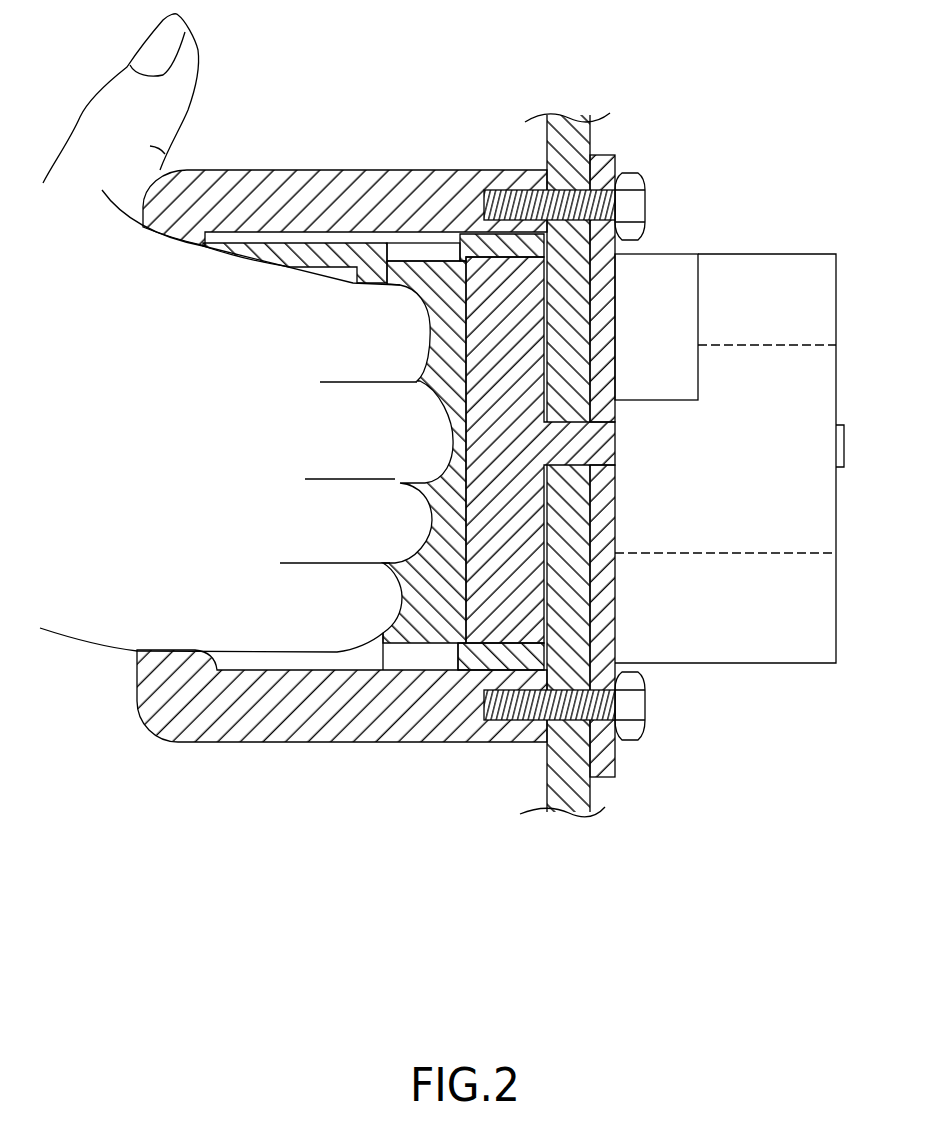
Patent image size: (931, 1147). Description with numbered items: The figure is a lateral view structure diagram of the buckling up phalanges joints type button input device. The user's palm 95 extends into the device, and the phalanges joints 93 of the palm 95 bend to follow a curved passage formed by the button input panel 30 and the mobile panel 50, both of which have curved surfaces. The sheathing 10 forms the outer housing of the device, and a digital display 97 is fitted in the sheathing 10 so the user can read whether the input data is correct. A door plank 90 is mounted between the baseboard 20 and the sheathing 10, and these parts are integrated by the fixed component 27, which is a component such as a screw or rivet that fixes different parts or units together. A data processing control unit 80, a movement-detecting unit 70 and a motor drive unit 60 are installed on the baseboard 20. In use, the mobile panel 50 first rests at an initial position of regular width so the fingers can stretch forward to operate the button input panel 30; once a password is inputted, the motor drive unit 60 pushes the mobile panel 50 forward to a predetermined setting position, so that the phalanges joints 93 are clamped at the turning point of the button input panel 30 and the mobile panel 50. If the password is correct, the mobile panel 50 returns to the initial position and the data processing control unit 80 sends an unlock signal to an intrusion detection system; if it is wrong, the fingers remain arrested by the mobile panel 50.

The sheathing 10 is at (348, 733).
The baseboard 20 is at (602, 753).
The fixed component 27 is at (636, 702).
The button input panel 30 is at (325, 268).
The mobile panel 50 is at (478, 268).
The motor drive unit 60 is at (845, 447).
The movement-detecting unit 70 is at (670, 268).
The data processing control unit 80 is at (767, 263).
The door plank 90 is at (580, 797).
The phalanges joints 93 is at (413, 540).
The palm 95 is at (123, 505).
The digital display 97 is at (187, 167).